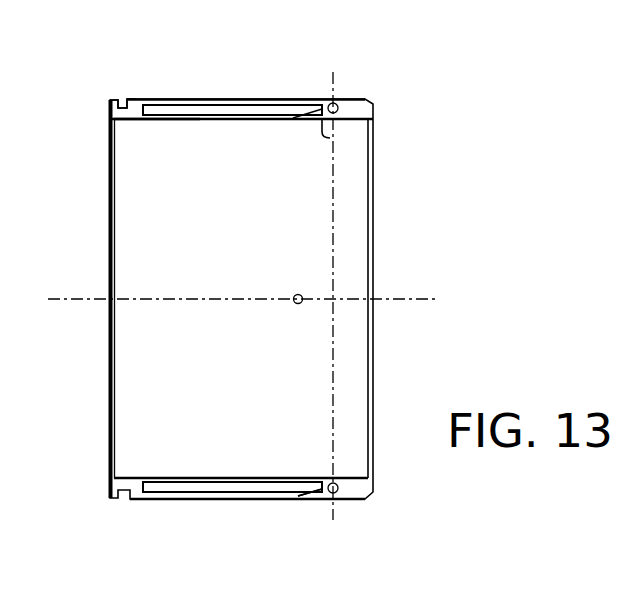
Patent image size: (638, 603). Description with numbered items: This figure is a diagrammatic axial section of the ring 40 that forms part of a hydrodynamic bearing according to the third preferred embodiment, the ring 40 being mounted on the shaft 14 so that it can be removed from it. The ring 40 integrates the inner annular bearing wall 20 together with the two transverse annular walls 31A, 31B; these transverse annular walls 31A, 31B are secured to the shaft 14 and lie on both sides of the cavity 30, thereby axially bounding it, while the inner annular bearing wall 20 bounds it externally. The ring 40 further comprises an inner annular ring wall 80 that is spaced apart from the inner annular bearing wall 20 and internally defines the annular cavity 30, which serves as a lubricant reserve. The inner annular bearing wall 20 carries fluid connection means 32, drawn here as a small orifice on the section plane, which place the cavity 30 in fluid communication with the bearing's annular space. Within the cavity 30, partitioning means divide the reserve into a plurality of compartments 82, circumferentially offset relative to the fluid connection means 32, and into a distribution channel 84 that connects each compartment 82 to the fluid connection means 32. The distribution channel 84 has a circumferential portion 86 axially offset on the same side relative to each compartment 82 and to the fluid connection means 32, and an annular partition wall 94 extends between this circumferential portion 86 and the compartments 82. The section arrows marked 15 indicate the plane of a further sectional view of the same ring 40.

The inner annular bearing wall 20 is at (213, 99).
The cavity 30 is at (175, 562).
The transverse annular wall 31A is at (132, 100).
The transverse annular wall 31B is at (330, 138).
The fluid connection means 32 is at (294, 301).
The ring 40 is at (106, 388).
The inner annular ring wall 80 is at (168, 121).
The compartments 82 is at (198, 488).
The distribution channel 84 is at (303, 493).
The circumferential portion 86 is at (303, 493).
The annular partition wall 94 is at (295, 118).
The shaft 14 is at (58, 267).
The section line 15- 15 is at (336, 72).